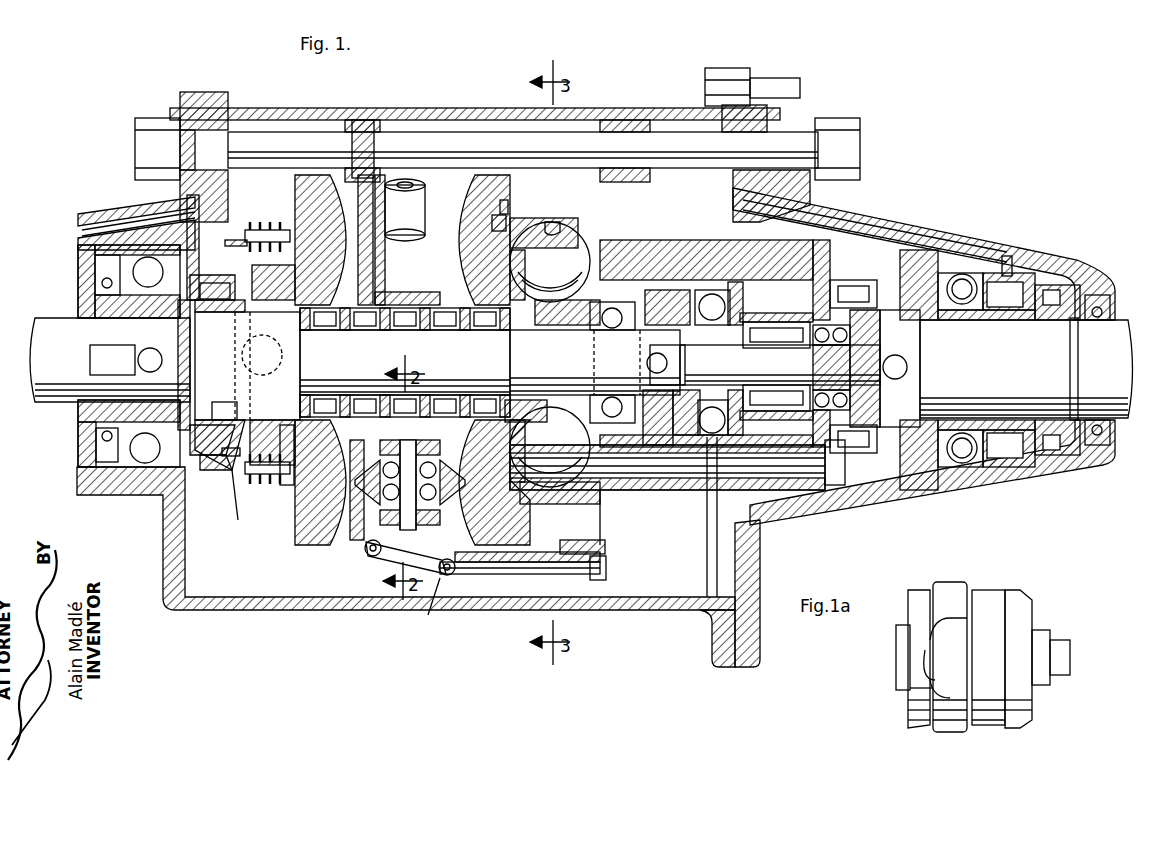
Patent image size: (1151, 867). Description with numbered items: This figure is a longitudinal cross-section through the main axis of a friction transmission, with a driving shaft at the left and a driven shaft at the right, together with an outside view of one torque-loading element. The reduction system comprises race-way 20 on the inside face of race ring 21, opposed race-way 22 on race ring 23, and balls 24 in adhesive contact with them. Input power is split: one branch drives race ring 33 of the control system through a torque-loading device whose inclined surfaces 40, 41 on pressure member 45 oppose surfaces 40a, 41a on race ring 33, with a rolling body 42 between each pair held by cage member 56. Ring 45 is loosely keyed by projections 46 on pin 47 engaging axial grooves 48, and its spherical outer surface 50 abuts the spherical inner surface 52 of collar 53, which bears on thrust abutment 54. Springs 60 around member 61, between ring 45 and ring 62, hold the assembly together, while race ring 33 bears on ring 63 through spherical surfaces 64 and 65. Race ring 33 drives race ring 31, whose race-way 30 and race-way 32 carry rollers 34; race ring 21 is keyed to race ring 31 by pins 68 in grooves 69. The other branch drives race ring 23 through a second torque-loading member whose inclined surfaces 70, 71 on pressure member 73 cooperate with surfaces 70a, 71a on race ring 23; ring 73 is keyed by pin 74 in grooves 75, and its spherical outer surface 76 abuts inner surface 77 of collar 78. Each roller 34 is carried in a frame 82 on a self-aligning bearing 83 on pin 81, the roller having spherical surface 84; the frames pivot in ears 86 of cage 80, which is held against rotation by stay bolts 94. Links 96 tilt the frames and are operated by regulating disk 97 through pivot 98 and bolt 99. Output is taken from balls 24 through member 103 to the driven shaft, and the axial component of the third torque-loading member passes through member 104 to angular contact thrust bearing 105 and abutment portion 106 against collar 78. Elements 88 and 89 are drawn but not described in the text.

In FIG. 1, the race-way 20 is at (560, 228).
In FIG. 1, the race ring 21 is at (522, 218).
In FIG. 1, the race-way 22 is at (554, 402).
In FIG. 1, the race ring 23 is at (570, 310).
In FIG. 1A, the race ring 23 is at (920, 590).
In FIG. 1, the rolling bodies 24 is at (550, 354).
In FIG. 1, the race-way 30 is at (478, 228).
In FIG. 1, the race ring 31 is at (480, 185).
In FIG. 1, the race-way 32 is at (325, 222).
In FIG. 1, the race ring 33 is at (345, 175).
In FIG. 1, the rolling bodies 34 is at (485, 410).
In FIG. 1, the inclined surface 40 is at (260, 345).
In FIG. 1, the inclined surface 40a is at (302, 365).
In FIG. 1, the inclined surface 41 is at (250, 395).
In FIG. 1, the inclined surface 41a is at (302, 338).
In FIG. 1, the rolling body 42 is at (262, 341).
In FIG. 1, the pressure member 45 is at (232, 470).
In FIG. 1, the projections 46 is at (129, 281).
In FIG. 1, the pin 47 is at (178, 340).
In FIG. 1, the axial grooves 48 is at (215, 290).
In FIG. 1, the outer surface 50 is at (214, 470).
In FIG. 1, the inner surface 52 is at (210, 445).
In FIG. 1, the collar 53 is at (200, 285).
In FIG. 1, the thrust abutment member 54 is at (126, 353).
In FIG. 1, the cage member 56 is at (240, 460).
In FIG. 1, the springs 60 is at (268, 486).
In FIG. 1, the spring-guide member 61 is at (265, 236).
In FIG. 1, the ring 62 is at (287, 488).
In FIG. 1, the ring 63 is at (318, 410).
In FIG. 1, the spherical contacting surface 64 is at (343, 408).
In FIG. 1, the spherical contacting surface 65 is at (320, 530).
In FIG. 1, the pins 68 is at (499, 214).
In FIG. 1, the grooves 69 is at (505, 200).
In FIG. 1, the inclined surface 70 is at (640, 455).
In FIG. 1A, the inclined surface 70 is at (968, 674).
In FIG. 1, the inclined surface 70a is at (595, 332).
In FIG. 1A, the inclined surface 70a is at (896, 636).
In FIG. 1, the inclined surface 71 is at (657, 358).
In FIG. 1A, the inclined surface 71 is at (972, 640).
In FIG. 1, the inclined surface 71a is at (598, 398).
In FIG. 1A, the inclined surface 71a is at (896, 680).
In FIG. 1, the pressure member 73 is at (662, 290).
In FIG. 1A, the pressure member 73 is at (990, 598).
In FIG. 1, the pin 74 is at (647, 366).
In FIG. 1, the axial grooves 75 is at (640, 358).
In FIG. 1, the outer surface 76 is at (700, 290).
In FIG. 1, the inner surface 77 is at (735, 282).
In FIG. 1, the collar 78 is at (670, 450).
In FIG. 1A, the collar 78 is at (1020, 610).
In FIG. 1, the cage 80 is at (430, 292).
In FIG. 1, the pin 81 is at (390, 530).
In FIG. 1, the frame 82 is at (372, 556).
In FIG. 1, the self-aligning bearing 83 is at (480, 530).
In FIG. 1, the spherical bearing surface 84 is at (530, 530).
In FIG. 1, the ears 86 is at (405, 182).
In FIG. 1, the link 88 is at (362, 548).
In FIG. 1, the collar 89 is at (348, 530).
In FIG. 1, the stay bolts 94 is at (280, 150).
In FIG. 1, the control links 96 is at (428, 610).
In FIG. 1, the regulating disk 97 is at (585, 533).
In FIG. 1, the pivot 98 is at (450, 580).
In FIG. 1, the bolt 99 is at (492, 576).
In FIG. 1, the member 103 is at (760, 250).
In FIG. 1, the member 104 is at (822, 262).
In FIG. 1, the angular contact thrust bearing 105 is at (708, 490).
In FIG. 1, the abutment portion 106 is at (742, 465).